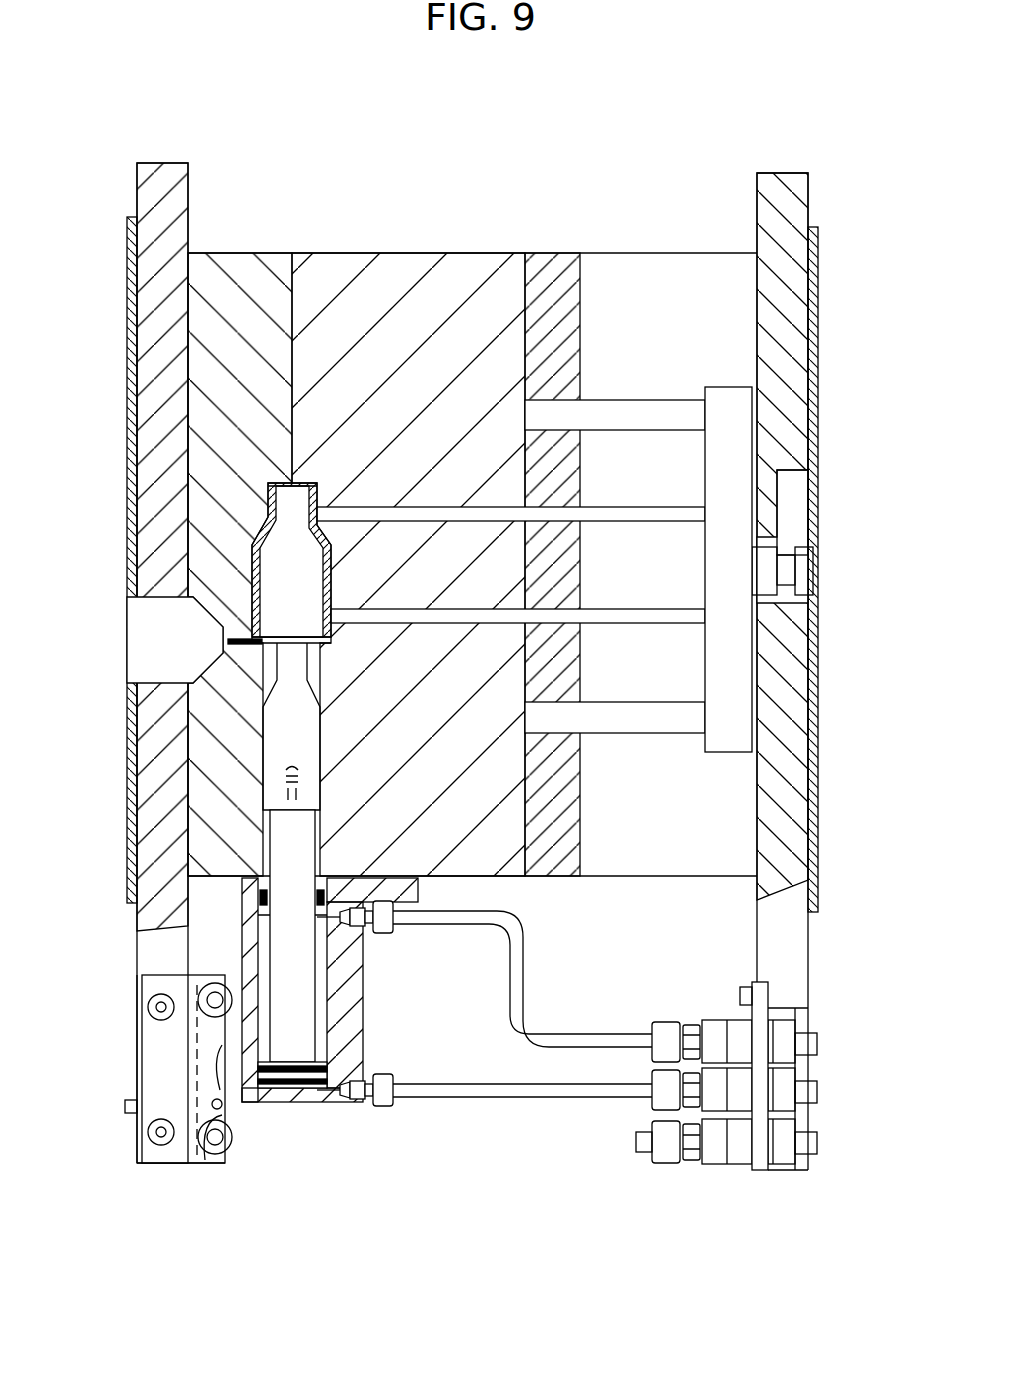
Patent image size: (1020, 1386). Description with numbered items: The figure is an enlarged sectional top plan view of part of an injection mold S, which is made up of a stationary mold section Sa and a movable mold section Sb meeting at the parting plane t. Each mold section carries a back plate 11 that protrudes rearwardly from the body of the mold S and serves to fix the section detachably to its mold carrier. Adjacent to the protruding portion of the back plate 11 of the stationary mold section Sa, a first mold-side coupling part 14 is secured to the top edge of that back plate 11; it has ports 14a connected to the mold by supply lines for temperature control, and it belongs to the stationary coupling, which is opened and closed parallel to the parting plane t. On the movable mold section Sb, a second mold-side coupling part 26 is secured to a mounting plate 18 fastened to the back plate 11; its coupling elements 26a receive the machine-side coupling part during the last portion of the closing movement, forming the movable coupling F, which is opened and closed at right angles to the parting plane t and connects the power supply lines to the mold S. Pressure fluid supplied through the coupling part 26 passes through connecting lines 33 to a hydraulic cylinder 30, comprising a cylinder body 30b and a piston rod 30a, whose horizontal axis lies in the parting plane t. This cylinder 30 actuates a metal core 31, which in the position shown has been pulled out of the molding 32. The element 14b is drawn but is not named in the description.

The back plate 11 is at (172, 178).
The first mold-side coupling part 14 is at (160, 1180).
The ports 14a is at (221, 1165).
The bolt 14b is at (182, 1128).
The mounting plate 18 is at (765, 1170).
The second mold-side coupling part 26 is at (688, 1040).
The coupling elements 26a is at (810, 1035).
The hydraulic cylinder 30 is at (329, 1115).
The piston rod 30a is at (287, 1040).
The cylinder body 30b is at (352, 965).
The metal core 31 is at (283, 727).
The molding 32 is at (250, 558).
The connecting lines 33 is at (556, 1097).
The injection mold S is at (642, 64).
The stationary mold section Sa is at (295, 123).
The movable mold section Sb is at (762, 130).
The parting plane t is at (296, 232).
The movable coupling F is at (625, 1196).